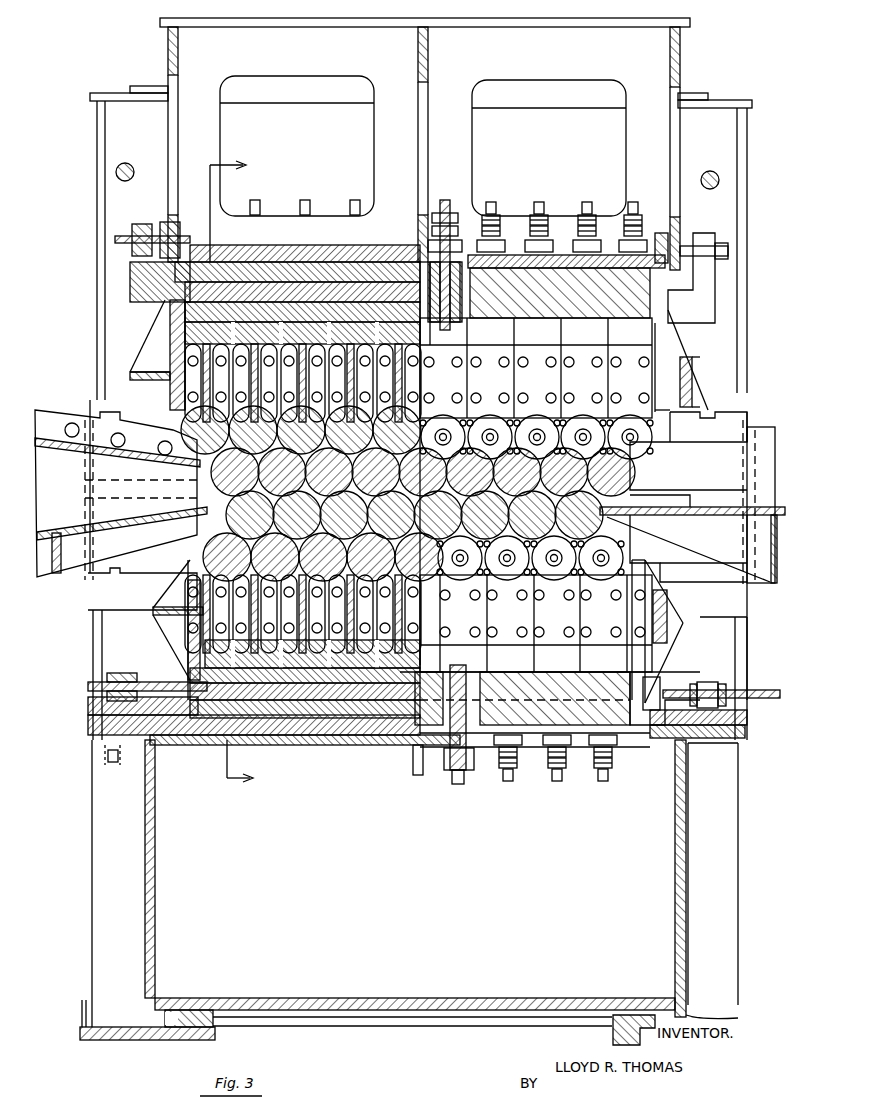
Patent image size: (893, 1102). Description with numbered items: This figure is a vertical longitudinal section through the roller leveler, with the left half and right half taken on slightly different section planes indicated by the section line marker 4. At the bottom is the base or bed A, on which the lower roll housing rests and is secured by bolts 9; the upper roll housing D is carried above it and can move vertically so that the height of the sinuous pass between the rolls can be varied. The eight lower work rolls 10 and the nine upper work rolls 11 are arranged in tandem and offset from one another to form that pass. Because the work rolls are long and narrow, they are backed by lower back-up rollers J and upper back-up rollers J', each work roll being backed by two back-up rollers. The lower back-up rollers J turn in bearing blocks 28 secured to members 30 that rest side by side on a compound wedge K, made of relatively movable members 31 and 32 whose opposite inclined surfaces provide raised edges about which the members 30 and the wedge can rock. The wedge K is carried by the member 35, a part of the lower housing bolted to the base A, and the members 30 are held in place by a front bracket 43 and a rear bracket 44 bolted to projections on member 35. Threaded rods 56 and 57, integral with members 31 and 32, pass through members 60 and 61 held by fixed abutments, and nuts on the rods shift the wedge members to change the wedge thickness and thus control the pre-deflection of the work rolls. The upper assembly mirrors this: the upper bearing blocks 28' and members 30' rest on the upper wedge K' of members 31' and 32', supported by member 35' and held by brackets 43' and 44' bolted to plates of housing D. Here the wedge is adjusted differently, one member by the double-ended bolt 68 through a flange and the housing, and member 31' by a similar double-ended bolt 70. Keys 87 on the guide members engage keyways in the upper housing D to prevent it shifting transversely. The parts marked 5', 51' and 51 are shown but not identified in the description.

The upper roll housing D is at (170, 48).
The section line indicator 4 is at (218, 477).
The clips 5' is at (305, 193).
The upper adjusting bolts 51' is at (562, 209).
The double-ended bolt 70 is at (686, 240).
The double-ended bolt 68 is at (122, 236).
The member 35' is at (427, 261).
The compound wedge K' is at (297, 252).
The member 30' is at (417, 271).
The wedge member 31' is at (479, 272).
The wedge member 32' is at (302, 283).
The front bracket 43' is at (151, 355).
The rear bracket 44' is at (690, 361).
The bearing block 28' is at (418, 370).
The bearing block 28 is at (418, 623).
The upper back-up rollers J' is at (417, 432).
The upper work rolls 11 is at (423, 472).
The lower work rolls 10 is at (414, 515).
The lower back-up rollers J is at (413, 557).
The keys 87 is at (88, 478).
The rear bracket 44 is at (670, 631).
The front bracket 43 is at (170, 630).
The members 30 is at (400, 685).
The wedge member 31 is at (305, 730).
The wedge member 32 is at (305, 737).
The member 35 is at (417, 738).
The compound wedge K is at (481, 745).
The threaded rod 56 is at (90, 686).
The member 60 is at (118, 673).
The bolts 9 is at (95, 745).
The threaded rod 57 is at (762, 690).
The member 61 is at (706, 682).
The lower adjusting bolts 51 is at (515, 748).
The base or bed A is at (102, 912).